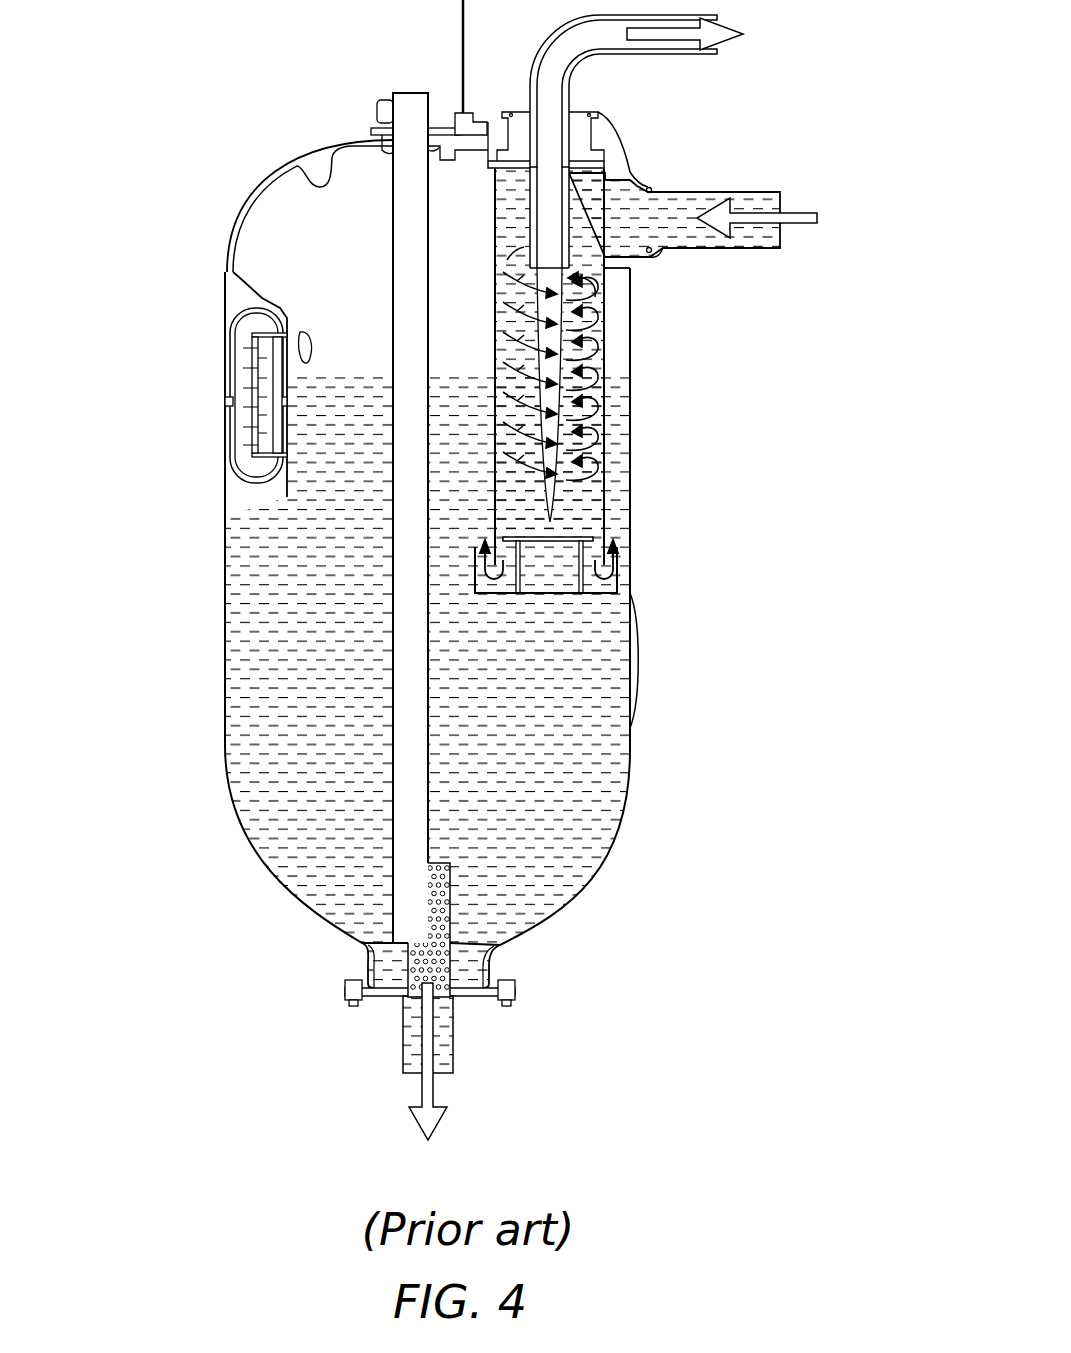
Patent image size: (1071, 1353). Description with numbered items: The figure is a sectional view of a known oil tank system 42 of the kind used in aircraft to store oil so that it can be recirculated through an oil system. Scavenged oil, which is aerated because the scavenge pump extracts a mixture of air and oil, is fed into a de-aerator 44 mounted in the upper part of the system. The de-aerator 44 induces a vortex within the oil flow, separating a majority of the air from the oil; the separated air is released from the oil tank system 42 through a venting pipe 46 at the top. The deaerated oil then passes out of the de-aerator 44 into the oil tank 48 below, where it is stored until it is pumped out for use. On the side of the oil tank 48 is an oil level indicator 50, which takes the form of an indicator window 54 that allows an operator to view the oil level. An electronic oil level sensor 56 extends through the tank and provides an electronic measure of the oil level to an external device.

The oil tank system 42 is at (163, 108).
The de-aerator 44 is at (605, 333).
The venting pipe 46 is at (583, 68).
The oil tank 48 is at (632, 675).
The oil level indicator 50 is at (198, 384).
The indicator window 54 is at (252, 358).
The electronic oil level sensor 56 is at (410, 660).